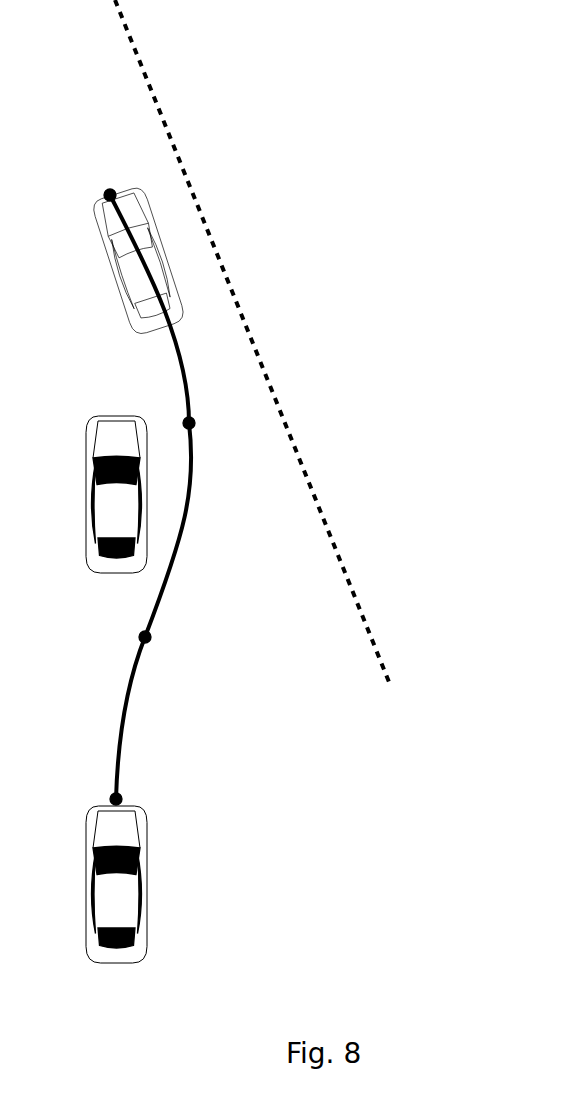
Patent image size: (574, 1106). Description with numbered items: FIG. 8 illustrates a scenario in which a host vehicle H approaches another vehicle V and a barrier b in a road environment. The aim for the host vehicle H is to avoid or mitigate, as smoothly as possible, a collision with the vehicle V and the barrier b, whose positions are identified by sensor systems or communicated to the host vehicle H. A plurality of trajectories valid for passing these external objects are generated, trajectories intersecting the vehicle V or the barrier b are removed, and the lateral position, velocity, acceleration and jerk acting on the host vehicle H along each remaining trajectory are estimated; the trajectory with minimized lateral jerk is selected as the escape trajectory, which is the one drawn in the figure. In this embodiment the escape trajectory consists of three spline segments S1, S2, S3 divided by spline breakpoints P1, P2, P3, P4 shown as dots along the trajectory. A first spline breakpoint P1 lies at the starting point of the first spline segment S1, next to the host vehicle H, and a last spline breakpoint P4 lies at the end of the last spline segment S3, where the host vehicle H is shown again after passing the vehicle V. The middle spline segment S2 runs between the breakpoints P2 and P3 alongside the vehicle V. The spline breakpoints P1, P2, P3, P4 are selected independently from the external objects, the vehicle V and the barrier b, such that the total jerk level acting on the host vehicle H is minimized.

The barrier b is at (170, 101).
The first spline breakpoint P1 is at (97, 786).
The spline breakpoint P2 is at (159, 645).
The spline breakpoint P3 is at (205, 427).
The last spline breakpoint P4 is at (99, 176).
The first spline segment S1 is at (136, 718).
The second spline segment S2 is at (179, 530).
The third spline segment S3 is at (159, 309).
The host vehicle H is at (136, 574).
The vehicle V is at (116, 494).